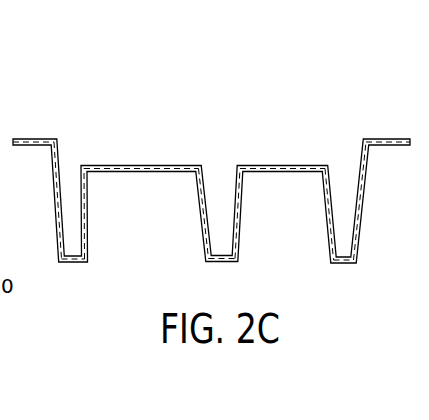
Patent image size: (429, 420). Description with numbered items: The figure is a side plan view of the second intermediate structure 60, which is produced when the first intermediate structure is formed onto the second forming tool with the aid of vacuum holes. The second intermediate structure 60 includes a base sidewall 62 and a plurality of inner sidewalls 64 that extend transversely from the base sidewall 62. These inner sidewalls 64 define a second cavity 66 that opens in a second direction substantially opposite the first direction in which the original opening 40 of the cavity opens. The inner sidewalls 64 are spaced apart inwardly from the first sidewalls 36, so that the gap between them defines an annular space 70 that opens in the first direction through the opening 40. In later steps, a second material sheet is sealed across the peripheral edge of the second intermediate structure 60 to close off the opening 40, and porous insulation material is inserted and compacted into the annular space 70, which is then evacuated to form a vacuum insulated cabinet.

The opening 40 is at (68, 125).
The first sidewalls 36 is at (53, 185).
The second intermediate structure 60 is at (380, 127).
The base sidewall 62 is at (153, 163).
The inner sidewalls 64 is at (78, 187).
The second cavity 66 is at (222, 158).
The annular space 70 is at (334, 138).